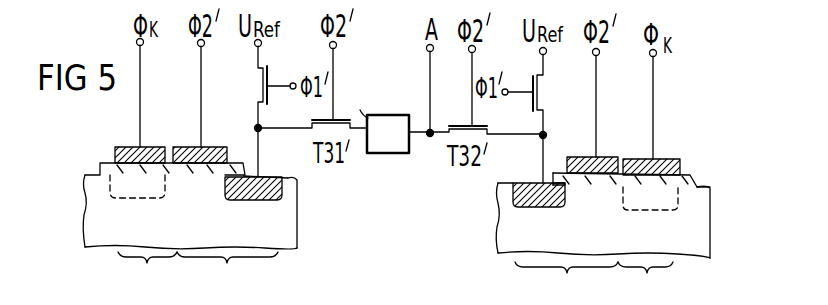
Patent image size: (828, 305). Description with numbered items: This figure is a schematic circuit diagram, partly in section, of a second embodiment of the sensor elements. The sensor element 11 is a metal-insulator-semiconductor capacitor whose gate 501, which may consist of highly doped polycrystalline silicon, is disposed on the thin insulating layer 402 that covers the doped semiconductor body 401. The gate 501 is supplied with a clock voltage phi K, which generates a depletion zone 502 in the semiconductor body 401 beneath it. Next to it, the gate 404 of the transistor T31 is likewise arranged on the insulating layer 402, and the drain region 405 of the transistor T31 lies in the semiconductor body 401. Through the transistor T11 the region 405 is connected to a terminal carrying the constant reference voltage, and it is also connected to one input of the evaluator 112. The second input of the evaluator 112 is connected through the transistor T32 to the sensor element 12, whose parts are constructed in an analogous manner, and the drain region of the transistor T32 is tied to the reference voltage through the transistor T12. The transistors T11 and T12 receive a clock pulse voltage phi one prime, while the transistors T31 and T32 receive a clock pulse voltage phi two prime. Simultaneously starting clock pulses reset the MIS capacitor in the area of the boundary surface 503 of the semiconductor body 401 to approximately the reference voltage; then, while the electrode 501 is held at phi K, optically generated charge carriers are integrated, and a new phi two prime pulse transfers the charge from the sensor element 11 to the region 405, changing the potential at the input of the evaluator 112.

The sensor element 11 is at (147, 277).
The sensor element 12 is at (645, 283).
The evaluator 112 is at (379, 123).
The semiconductor body 401 is at (290, 223).
The insulating layer 402 is at (102, 165).
The gate 404 is at (223, 141).
The drain region 405 is at (255, 199).
The gate 501 is at (156, 141).
The depletion zone 502 is at (123, 199).
The boundary surface 503 is at (291, 176).
The transistor T11 is at (262, 88).
The transistor T12 is at (537, 95).
The transistor T31 is at (227, 277).
The transistor T32 is at (566, 283).